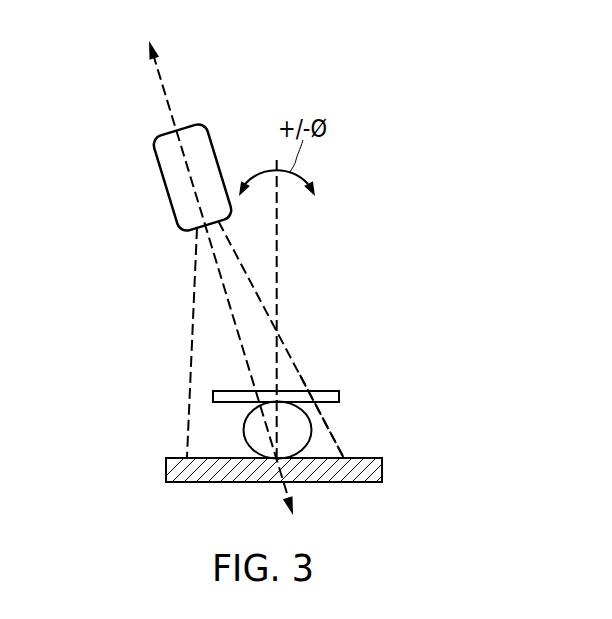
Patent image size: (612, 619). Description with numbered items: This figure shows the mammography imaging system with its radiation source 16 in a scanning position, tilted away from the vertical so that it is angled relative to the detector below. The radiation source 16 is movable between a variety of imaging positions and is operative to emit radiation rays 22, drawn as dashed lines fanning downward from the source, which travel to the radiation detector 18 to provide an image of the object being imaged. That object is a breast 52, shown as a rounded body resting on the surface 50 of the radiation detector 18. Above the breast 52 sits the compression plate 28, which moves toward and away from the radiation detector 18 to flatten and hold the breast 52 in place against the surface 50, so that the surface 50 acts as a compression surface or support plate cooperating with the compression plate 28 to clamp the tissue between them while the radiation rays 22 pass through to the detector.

The radiation source 16 is at (166, 191).
The radiation rays 22 is at (191, 351).
The radiation detector 18 is at (347, 483).
The compression plate 28 is at (340, 396).
The breast 52 is at (293, 428).
The surface 50 is at (382, 463).